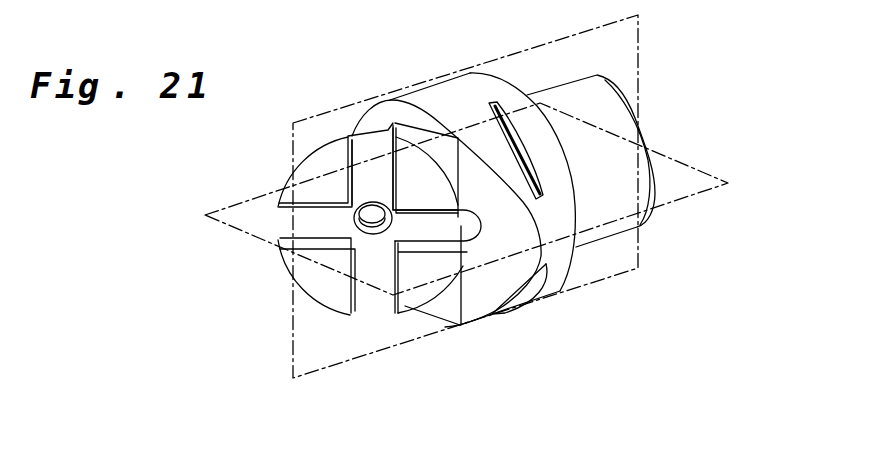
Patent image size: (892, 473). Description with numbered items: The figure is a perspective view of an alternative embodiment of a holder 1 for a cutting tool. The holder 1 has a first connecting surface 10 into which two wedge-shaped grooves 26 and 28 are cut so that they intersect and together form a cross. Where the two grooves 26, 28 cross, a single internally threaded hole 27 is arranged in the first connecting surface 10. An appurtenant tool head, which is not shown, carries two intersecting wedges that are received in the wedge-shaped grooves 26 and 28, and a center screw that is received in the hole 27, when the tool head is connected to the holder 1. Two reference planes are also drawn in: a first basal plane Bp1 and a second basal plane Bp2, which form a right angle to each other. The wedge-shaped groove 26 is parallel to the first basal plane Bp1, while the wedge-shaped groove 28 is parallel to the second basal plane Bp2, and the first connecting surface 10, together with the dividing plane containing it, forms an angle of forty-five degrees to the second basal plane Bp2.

The first basal plane Bp1 is at (231, 203).
The second basal plane Bp2 is at (518, 50).
The holder 1 is at (533, 307).
The first connecting surface 10 is at (405, 300).
The wedge-shaped groove 26 is at (437, 226).
The internally threaded hole 27 is at (371, 235).
The wedge-shaped groove 28 is at (360, 148).